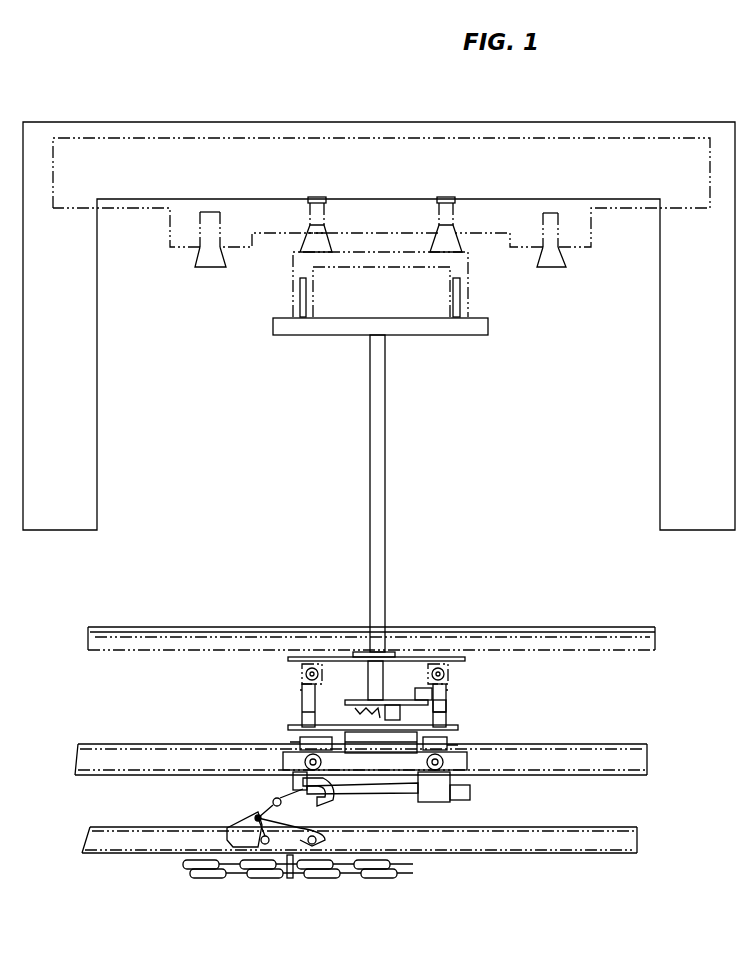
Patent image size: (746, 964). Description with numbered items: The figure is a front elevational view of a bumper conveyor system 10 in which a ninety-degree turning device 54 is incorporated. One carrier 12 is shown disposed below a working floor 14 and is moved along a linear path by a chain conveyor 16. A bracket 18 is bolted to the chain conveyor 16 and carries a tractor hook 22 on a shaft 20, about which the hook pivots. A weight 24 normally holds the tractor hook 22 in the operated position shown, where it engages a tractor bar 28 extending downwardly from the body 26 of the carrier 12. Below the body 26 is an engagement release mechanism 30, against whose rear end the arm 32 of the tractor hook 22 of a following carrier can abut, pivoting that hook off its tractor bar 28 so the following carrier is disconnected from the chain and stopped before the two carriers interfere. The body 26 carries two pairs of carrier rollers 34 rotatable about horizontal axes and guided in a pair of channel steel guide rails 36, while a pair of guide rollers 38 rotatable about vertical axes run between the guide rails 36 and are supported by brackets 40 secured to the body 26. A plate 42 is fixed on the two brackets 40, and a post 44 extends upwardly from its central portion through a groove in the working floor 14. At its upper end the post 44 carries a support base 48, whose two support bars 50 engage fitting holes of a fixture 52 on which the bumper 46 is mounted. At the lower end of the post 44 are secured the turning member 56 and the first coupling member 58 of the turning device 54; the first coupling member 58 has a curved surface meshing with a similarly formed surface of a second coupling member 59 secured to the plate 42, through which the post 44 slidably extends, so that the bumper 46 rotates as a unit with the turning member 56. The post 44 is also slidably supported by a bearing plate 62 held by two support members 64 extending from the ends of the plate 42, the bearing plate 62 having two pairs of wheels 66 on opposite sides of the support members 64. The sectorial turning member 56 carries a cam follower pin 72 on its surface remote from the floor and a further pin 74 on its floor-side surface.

The bumper conveyor system 10 is at (553, 551).
The carrier 12 is at (200, 702).
The working floor 14 is at (598, 626).
The chain conveyor 16 is at (203, 877).
The bracket 18 is at (290, 879).
The shaft 20 is at (252, 810).
The tractor hook 22 is at (310, 803).
The weight 24 is at (235, 835).
The body 26 is at (456, 762).
The tractor bar 28 is at (362, 805).
The engagement release mechanism 30 is at (423, 808).
The arm 32 is at (278, 797).
The carrier rollers 34 is at (308, 762).
The guide rails 36 is at (602, 755).
The guide rollers 38 is at (303, 743).
The brackets 40 is at (300, 731).
The plate 42 is at (300, 725).
The post 44 is at (386, 541).
The bumper 46 is at (668, 290).
The support base 48 is at (442, 326).
The support bars 50 is at (300, 297).
The fixture 52 is at (490, 225).
The 90° turning device 54 is at (402, 688).
The turning member 56 is at (358, 698).
The first coupling member 58 is at (302, 697).
The second coupling member 59 is at (356, 712).
The bearing plate 62 is at (449, 659).
The support members 64 is at (367, 715).
The wheels 66 is at (312, 668).
The pin 72 is at (410, 713).
The pin 74 is at (452, 690).